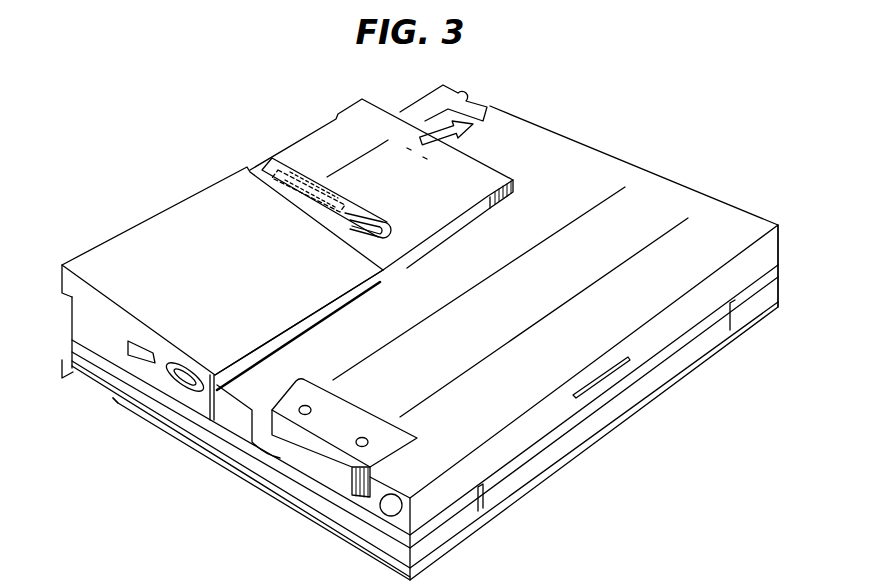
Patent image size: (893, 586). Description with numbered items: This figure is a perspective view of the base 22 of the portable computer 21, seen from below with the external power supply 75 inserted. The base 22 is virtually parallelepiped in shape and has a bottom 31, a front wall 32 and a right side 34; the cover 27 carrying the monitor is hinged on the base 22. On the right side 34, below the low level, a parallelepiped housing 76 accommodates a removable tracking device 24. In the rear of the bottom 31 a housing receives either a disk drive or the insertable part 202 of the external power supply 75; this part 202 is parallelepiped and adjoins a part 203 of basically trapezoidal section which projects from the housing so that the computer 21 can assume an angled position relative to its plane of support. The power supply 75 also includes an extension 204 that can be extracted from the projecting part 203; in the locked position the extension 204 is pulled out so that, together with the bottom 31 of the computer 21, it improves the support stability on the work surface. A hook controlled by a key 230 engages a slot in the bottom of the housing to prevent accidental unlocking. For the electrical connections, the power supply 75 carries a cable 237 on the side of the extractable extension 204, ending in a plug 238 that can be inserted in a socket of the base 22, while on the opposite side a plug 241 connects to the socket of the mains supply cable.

The portable computer 21 is at (667, 144).
The base 22 is at (782, 252).
The removable tracking device 24 is at (320, 460).
The cover 27 is at (712, 352).
The bottom 31 is at (578, 176).
The front wall 32 is at (492, 462).
The right side 34 is at (235, 420).
The external power supply 75 is at (172, 200).
The parallelepiped housing 76 is at (260, 422).
The insertable part 202 is at (73, 370).
The projecting part 203 is at (163, 347).
The extension 204 is at (473, 173).
The key 230 is at (132, 341).
The cable 237 is at (400, 235).
The plug 238 is at (283, 160).
The plug 241 is at (187, 390).